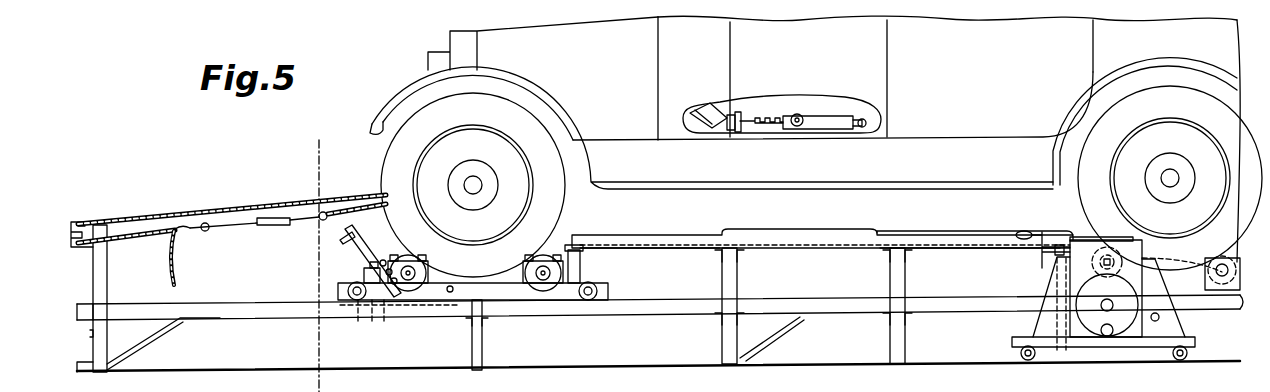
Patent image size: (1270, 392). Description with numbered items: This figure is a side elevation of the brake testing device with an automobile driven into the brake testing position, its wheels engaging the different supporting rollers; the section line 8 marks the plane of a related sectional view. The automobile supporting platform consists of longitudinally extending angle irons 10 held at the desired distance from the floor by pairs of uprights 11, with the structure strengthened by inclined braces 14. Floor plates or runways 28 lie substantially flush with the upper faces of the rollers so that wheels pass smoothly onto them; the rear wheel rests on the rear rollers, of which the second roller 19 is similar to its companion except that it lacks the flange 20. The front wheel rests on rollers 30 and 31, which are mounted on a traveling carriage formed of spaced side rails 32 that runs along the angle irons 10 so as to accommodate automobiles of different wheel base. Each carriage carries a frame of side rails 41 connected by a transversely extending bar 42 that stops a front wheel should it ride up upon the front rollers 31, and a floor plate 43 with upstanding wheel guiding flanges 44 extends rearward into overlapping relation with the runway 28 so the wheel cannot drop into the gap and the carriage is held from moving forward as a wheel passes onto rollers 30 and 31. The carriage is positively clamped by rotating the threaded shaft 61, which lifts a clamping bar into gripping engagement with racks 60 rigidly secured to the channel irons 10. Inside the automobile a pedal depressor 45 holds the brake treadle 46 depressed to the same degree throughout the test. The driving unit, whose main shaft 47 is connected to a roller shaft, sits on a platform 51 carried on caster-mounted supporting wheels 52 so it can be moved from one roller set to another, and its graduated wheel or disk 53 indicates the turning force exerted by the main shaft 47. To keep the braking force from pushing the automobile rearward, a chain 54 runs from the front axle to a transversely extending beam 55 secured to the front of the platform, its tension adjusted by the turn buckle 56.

The section line 8- 8 is at (333, 139).
The angle irons 10 is at (814, 316).
The uprights 11 is at (108, 284).
The inclined braces 14 is at (165, 340).
The second roller 19 is at (1097, 240).
The flange 20 is at (1216, 292).
The floor plates or runways 28 is at (935, 250).
The roller 30 is at (568, 238).
The front roller 31 is at (409, 256).
The side rails 32 is at (512, 296).
The side rails 41 is at (374, 251).
The transversely extending bar 42 is at (348, 244).
The floor plate 43 is at (669, 250).
The wheel guiding flanges 44 is at (653, 233).
The pedal depressor 45 is at (819, 115).
The brake treadle 46 is at (706, 110).
The main shaft 47 is at (1106, 250).
The platform 51 is at (1148, 356).
The supporting wheels 52 is at (1185, 358).
The graduated wheel or disk 53 is at (1060, 375).
The chain 54 is at (207, 212).
The transversely extending beam 55 is at (92, 222).
The turn buckle 56 is at (262, 229).
The racks 60 is at (388, 318).
The threaded shaft 61 is at (362, 273).